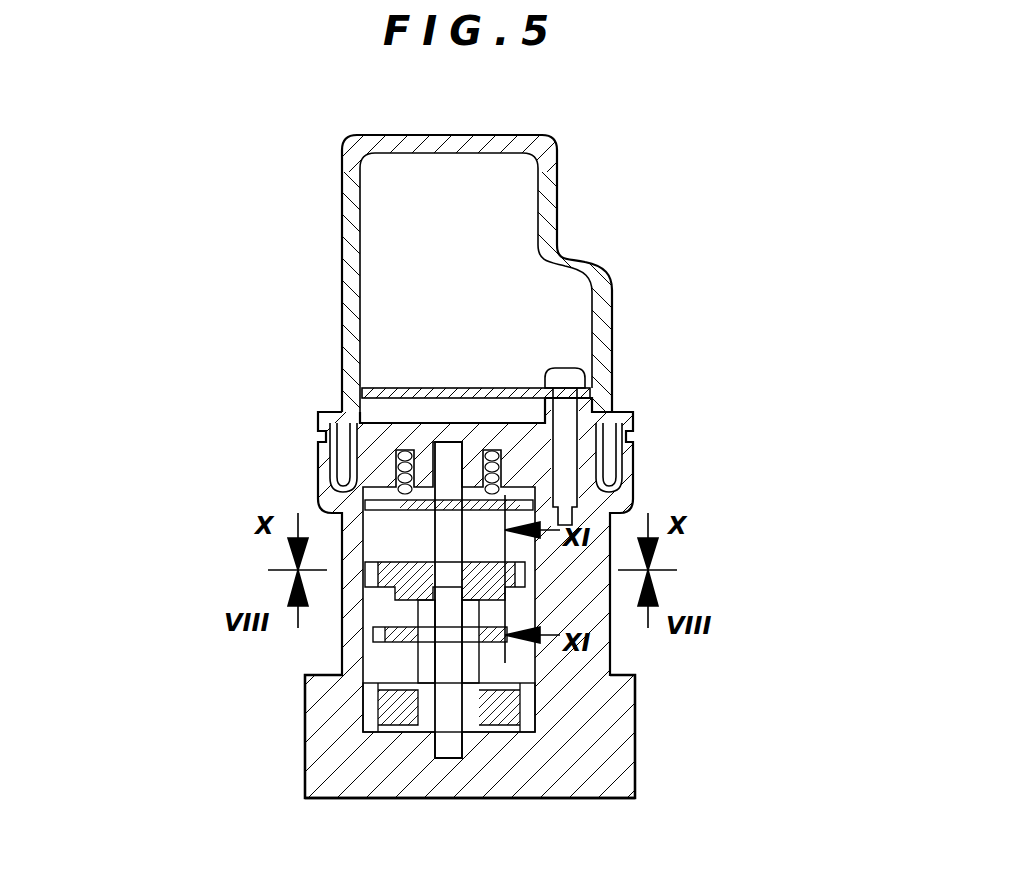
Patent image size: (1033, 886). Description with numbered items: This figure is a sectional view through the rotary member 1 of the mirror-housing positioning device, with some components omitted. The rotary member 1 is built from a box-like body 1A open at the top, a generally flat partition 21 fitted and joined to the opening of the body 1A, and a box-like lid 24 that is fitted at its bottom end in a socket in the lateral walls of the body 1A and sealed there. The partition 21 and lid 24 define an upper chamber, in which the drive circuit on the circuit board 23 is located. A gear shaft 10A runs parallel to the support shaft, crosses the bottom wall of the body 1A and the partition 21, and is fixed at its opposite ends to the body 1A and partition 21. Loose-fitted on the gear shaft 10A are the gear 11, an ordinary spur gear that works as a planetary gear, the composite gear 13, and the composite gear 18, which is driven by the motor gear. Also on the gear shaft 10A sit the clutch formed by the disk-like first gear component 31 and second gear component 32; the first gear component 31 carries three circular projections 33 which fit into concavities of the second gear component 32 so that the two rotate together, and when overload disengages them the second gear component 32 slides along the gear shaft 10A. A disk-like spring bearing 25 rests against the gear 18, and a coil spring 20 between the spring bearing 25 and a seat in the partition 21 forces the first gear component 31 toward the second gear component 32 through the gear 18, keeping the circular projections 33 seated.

The rotary member 1 is at (356, 800).
The body 1A is at (622, 760).
The gear shaft 10A is at (453, 663).
The gear 11 is at (383, 717).
The gear 13 is at (380, 648).
The gear 18 is at (325, 475).
The coil spring 20 is at (500, 470).
The partition 21 is at (560, 443).
The circuit board 23 is at (405, 393).
The lid 24 is at (558, 192).
The spring bearing 25 is at (480, 487).
The first gear component 31 is at (400, 556).
The second gear component 32 is at (410, 600).
The circular projections 33 is at (503, 583).